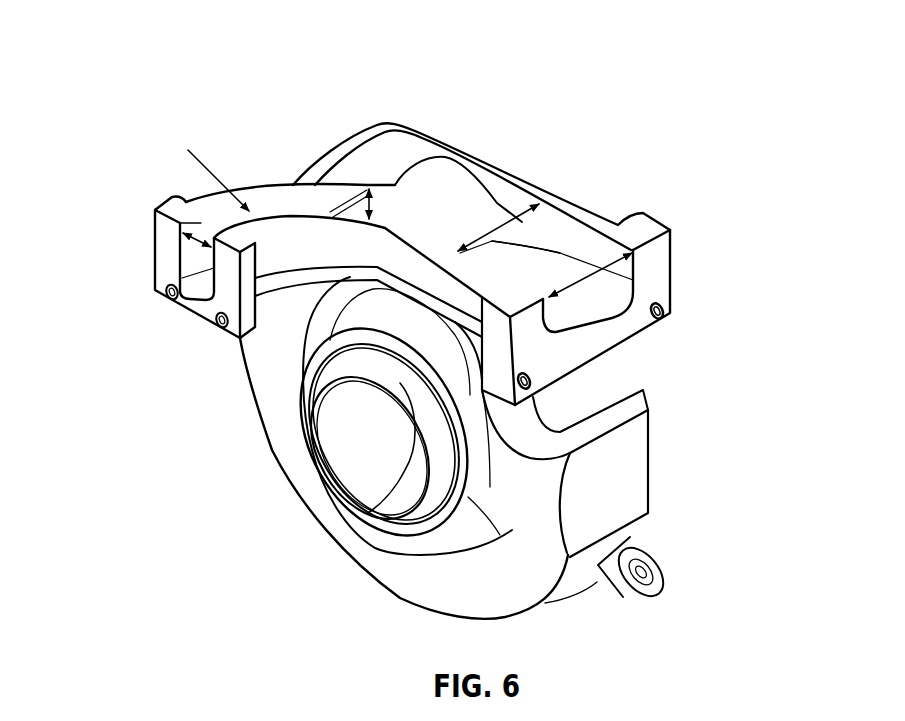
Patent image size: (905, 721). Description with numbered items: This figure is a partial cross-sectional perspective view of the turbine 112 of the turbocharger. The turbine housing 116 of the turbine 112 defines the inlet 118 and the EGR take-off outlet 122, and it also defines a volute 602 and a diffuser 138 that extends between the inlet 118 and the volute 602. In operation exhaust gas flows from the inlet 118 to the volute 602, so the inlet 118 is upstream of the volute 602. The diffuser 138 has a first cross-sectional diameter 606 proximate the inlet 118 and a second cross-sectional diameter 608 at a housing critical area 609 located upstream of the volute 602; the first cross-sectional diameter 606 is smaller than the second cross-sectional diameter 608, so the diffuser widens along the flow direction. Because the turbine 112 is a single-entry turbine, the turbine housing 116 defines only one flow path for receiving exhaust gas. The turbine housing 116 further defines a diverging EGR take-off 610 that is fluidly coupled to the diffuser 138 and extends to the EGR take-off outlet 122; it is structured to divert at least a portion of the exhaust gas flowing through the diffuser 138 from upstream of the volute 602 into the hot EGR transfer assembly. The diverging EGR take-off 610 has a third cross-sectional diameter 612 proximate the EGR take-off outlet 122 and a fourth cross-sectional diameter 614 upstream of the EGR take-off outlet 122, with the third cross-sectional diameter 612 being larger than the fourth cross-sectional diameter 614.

The turbine 112 is at (728, 72).
The turbine housing 116 is at (268, 391).
The inlet 118 is at (605, 322).
The EGR take-off outlet 122 is at (157, 285).
The diffuser 138 is at (547, 253).
The volute 602 is at (428, 262).
The first cross-sectional diameter 606 is at (664, 316).
The second cross-sectional diameter 608 is at (497, 240).
The housing critical area 609 is at (497, 240).
The diverging EGR take-off 610 is at (222, 217).
The third cross-sectional diameter 612 is at (180, 225).
The fourth cross-sectional diameter 614 is at (362, 190).